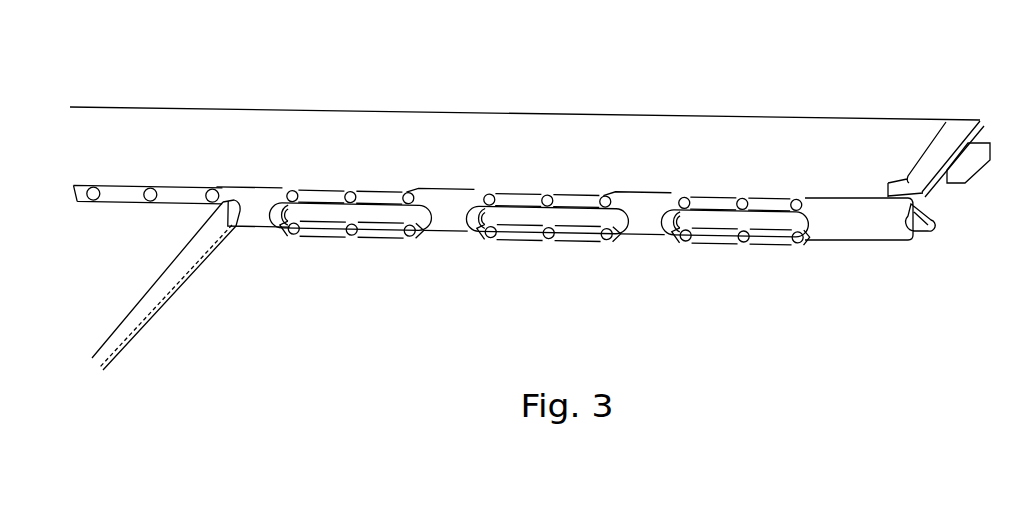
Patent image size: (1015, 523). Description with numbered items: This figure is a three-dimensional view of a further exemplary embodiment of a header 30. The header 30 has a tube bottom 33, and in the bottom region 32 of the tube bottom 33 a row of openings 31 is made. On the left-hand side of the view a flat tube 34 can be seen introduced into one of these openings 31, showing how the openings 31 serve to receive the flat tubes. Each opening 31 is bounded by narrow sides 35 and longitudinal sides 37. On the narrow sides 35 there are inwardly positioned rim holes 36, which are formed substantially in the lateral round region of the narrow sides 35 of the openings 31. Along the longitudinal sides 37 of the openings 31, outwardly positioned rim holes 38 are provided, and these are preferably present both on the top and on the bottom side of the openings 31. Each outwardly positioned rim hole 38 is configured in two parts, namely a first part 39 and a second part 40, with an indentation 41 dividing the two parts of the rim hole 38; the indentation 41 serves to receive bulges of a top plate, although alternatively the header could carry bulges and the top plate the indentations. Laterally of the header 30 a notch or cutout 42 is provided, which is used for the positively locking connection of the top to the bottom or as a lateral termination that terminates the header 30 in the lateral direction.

The header 30 is at (528, 158).
The openings 31 is at (533, 191).
The bottom region 32 is at (863, 223).
The tube bottom 33 is at (863, 136).
The flat tube 34 is at (108, 306).
The narrow sides 35 is at (265, 226).
The inwardly positioned rim holes 36 is at (274, 232).
The longitudinal sides 37 is at (388, 188).
The outwardly positioned rim holes 38 is at (320, 190).
The first part 39 is at (693, 198).
The second part 40 is at (771, 198).
The indentation 41 is at (732, 200).
The notch or cutout 42 is at (948, 122).